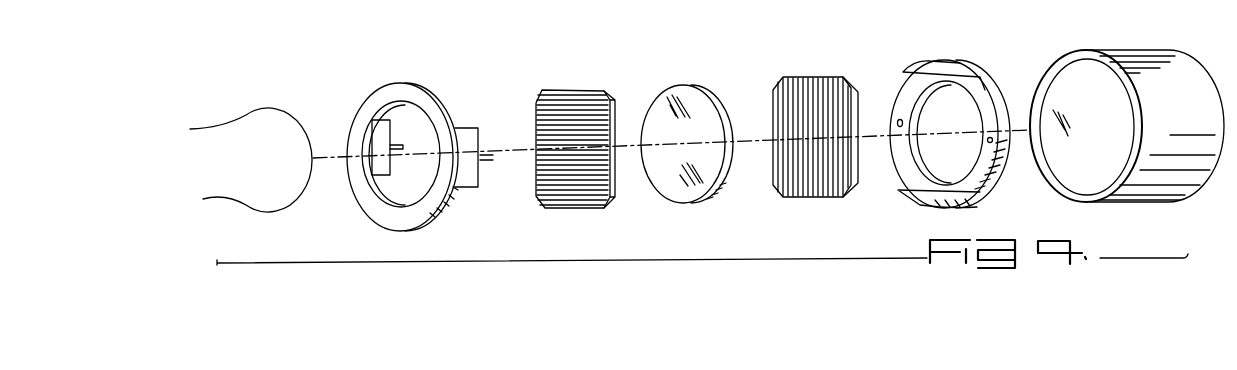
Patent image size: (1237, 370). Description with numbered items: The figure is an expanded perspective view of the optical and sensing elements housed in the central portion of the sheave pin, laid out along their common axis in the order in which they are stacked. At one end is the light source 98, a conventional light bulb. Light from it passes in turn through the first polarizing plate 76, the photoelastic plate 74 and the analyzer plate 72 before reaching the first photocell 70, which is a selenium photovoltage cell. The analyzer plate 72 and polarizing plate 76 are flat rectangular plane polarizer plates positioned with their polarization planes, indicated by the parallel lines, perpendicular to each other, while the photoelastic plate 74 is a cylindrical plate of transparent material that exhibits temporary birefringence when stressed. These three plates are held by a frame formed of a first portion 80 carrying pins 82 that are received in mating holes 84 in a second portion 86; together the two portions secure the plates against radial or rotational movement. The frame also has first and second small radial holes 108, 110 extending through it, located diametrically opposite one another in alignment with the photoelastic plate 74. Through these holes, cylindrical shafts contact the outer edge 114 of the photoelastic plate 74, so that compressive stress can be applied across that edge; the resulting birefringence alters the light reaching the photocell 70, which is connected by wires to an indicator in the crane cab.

The first photocell 70 is at (1110, 52).
The analyzer plate 72 is at (813, 75).
The photoelastic plate 74 is at (705, 93).
The first polarizing plate 76 is at (597, 88).
The first portion 80 is at (382, 93).
The pins 82 is at (403, 145).
The mating holes 84 is at (899, 119).
The second portion 86 is at (983, 85).
The light source 98 is at (270, 110).
The first radial hole 108 is at (940, 192).
The second radial hole 110 is at (955, 60).
The outer edge 114 is at (717, 188).